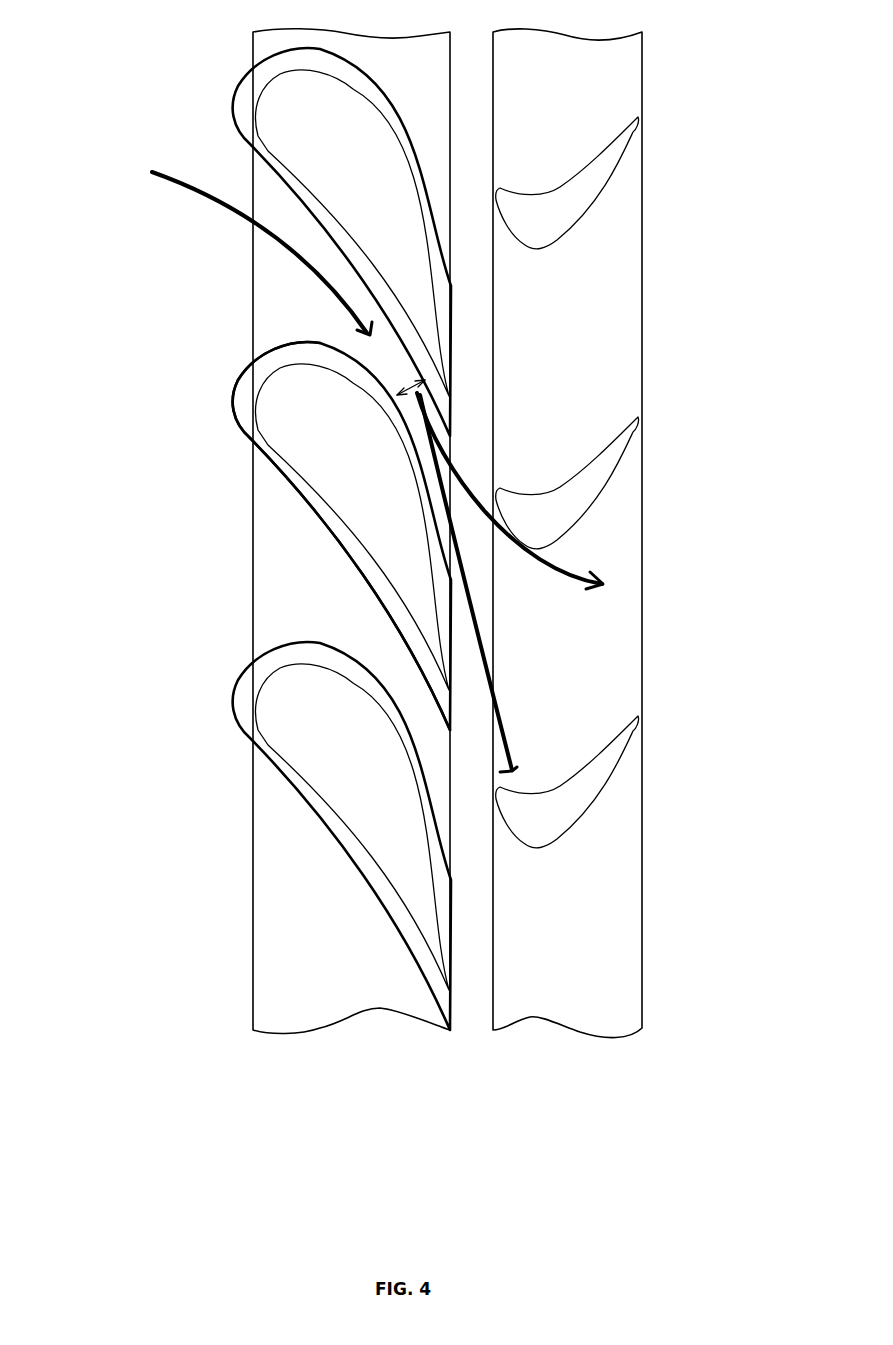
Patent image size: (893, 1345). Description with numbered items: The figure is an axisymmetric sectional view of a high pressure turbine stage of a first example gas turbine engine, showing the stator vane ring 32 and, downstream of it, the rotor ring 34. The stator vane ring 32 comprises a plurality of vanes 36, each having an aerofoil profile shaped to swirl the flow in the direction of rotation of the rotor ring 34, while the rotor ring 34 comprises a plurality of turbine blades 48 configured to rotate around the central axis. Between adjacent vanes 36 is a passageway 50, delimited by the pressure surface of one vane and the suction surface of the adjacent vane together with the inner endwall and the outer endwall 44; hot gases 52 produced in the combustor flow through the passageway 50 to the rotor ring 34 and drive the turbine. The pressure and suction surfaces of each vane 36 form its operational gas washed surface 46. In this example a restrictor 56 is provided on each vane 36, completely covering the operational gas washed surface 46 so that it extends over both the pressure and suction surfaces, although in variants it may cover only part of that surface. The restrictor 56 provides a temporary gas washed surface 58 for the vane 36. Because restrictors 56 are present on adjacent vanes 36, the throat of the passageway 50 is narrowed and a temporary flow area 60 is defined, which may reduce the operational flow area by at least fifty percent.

The stator vane ring 32 is at (337, 1023).
The rotor ring 34 is at (610, 609).
The vane 36 is at (249, 536).
The outer endwall 44 is at (293, 888).
The operational gas washed surface 46 is at (350, 520).
The turbine blade 48 is at (568, 805).
The passageway 50 is at (365, 290).
The hot gases 52 is at (197, 189).
The restrictor 56 is at (250, 394).
The temporary gas washed surface 58 is at (290, 490).
The temporary flow area 60 is at (425, 380).